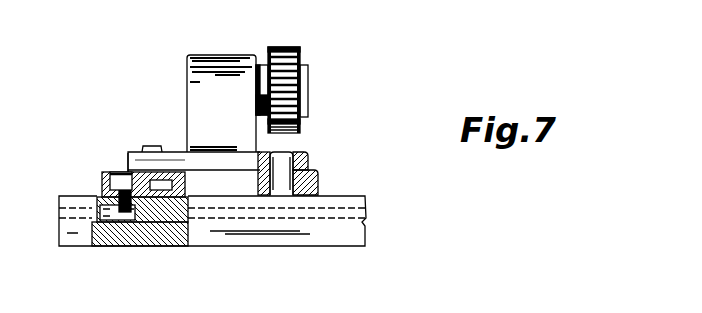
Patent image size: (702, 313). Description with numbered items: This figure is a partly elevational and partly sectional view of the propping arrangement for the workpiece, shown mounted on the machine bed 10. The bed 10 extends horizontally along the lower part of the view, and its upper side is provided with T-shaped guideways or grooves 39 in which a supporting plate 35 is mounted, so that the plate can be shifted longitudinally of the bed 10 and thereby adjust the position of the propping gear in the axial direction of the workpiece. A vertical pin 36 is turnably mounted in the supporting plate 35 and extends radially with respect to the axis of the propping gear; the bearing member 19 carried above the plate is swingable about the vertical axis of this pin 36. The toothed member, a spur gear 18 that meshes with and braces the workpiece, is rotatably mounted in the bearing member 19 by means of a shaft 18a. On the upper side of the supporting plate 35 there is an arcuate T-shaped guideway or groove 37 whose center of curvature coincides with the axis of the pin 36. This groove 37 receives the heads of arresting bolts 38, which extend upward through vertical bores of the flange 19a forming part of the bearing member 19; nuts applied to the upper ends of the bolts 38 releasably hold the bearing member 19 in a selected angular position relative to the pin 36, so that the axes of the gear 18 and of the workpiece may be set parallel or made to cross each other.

The bed 10 is at (348, 235).
The spur gear 18 is at (298, 58).
The shaft 18a is at (263, 73).
The bearing member 19 is at (192, 78).
The flange 19a is at (128, 153).
The supporting plate 35 is at (318, 180).
The pin 36 is at (305, 157).
The arcuate T-shaped guideway 37 is at (168, 196).
The arresting bolts 38 is at (157, 147).
The T-shaped guideways 39 is at (182, 213).